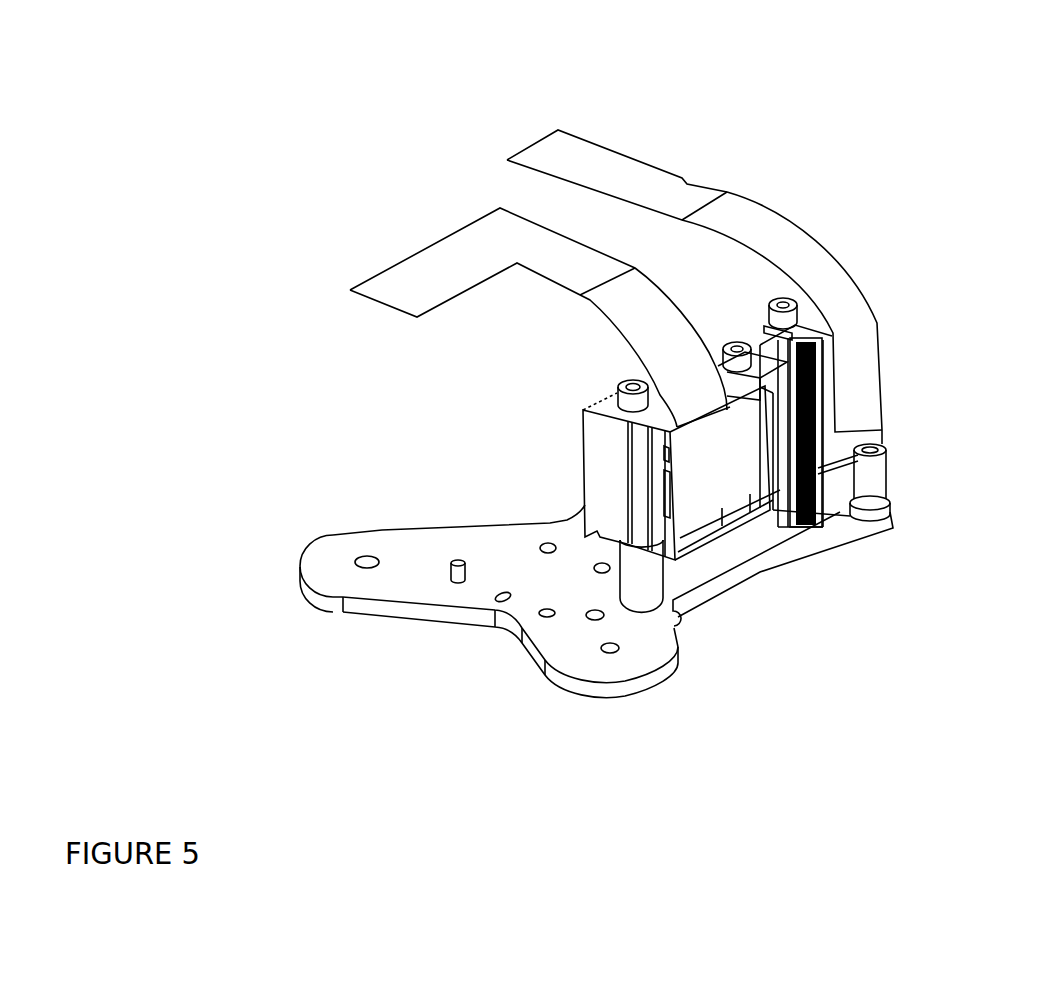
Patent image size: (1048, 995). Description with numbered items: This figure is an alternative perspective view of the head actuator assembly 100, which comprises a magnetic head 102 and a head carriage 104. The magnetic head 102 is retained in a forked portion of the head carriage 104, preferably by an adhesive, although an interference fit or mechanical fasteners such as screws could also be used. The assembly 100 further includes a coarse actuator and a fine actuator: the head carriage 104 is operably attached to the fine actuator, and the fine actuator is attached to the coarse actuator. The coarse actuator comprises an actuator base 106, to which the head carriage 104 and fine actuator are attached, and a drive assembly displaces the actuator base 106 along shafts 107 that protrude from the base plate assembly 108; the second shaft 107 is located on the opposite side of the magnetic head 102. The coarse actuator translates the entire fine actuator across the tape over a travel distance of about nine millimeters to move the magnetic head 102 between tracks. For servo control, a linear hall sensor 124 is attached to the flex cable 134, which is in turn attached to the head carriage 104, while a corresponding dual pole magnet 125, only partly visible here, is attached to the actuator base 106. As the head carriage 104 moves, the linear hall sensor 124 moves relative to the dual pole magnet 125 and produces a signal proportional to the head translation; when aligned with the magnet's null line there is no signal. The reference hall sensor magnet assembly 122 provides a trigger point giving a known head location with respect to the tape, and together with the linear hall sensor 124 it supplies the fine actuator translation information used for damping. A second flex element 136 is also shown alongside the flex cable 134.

The head actuator assembly 100 is at (398, 205).
The magnetic head 102 is at (822, 516).
The head carriage 104 is at (772, 358).
The actuator base 106 is at (617, 461).
The shaft 107 is at (777, 298).
The base plate assembly 108 is at (530, 572).
The reference hall sensor magnet assembly 122 is at (886, 484).
The linear hall sensor 124 is at (672, 495).
The dual pole magnet 125 is at (660, 455).
The flex cable 134 is at (509, 255).
The upper flexure 136 is at (610, 182).